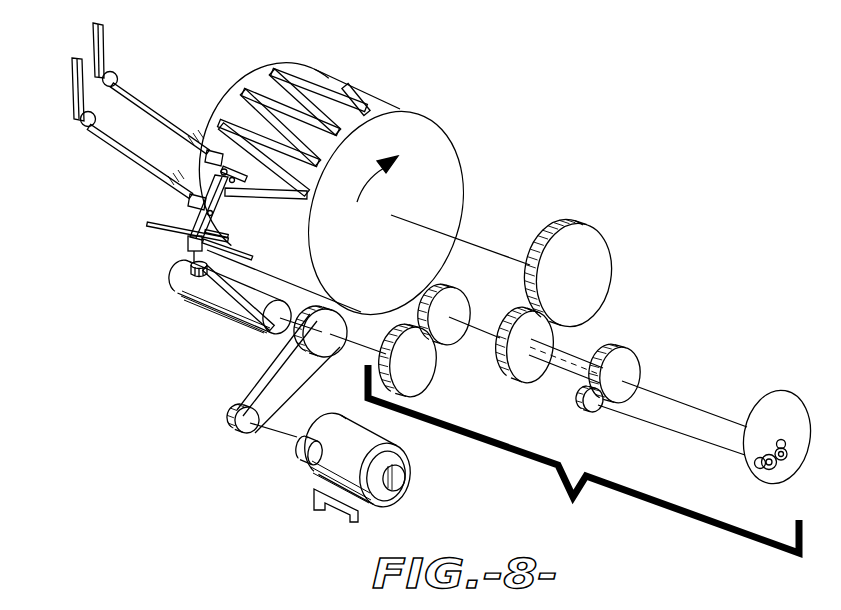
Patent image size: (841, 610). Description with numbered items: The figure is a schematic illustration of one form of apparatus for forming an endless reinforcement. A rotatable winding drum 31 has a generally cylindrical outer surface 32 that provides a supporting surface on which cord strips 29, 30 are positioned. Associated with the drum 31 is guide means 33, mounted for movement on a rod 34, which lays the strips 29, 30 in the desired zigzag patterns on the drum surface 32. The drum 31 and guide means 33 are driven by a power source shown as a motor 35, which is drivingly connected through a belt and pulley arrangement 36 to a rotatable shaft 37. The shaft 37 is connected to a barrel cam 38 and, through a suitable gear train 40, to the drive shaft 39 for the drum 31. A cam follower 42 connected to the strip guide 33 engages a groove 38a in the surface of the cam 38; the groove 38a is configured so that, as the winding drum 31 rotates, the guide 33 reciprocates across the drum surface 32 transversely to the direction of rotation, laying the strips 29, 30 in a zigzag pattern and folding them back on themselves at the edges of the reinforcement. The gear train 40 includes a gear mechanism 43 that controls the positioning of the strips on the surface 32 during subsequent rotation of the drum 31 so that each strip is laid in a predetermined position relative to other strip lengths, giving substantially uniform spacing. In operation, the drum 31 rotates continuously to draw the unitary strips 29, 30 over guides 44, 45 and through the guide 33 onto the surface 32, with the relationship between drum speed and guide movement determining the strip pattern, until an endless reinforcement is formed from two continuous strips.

The cord strip 29 is at (74, 98).
The cord strip 30 is at (93, 44).
The winding drum 31 is at (435, 133).
The cylindrical outer surface 32 is at (262, 72).
The guide means 33 is at (232, 210).
The rod 34 is at (160, 244).
The motor 35 is at (400, 482).
The belt and pulley arrangement 36 is at (239, 408).
The rotatable shaft 37 is at (353, 347).
The barrel cam 38 is at (187, 296).
The groove 38a is at (242, 326).
The drive shaft 39 is at (483, 228).
The gear train 40 is at (583, 459).
The cam follower 42 is at (172, 275).
The gear mechanism 43 is at (768, 398).
The guide 44 is at (89, 132).
The guide 45 is at (110, 80).